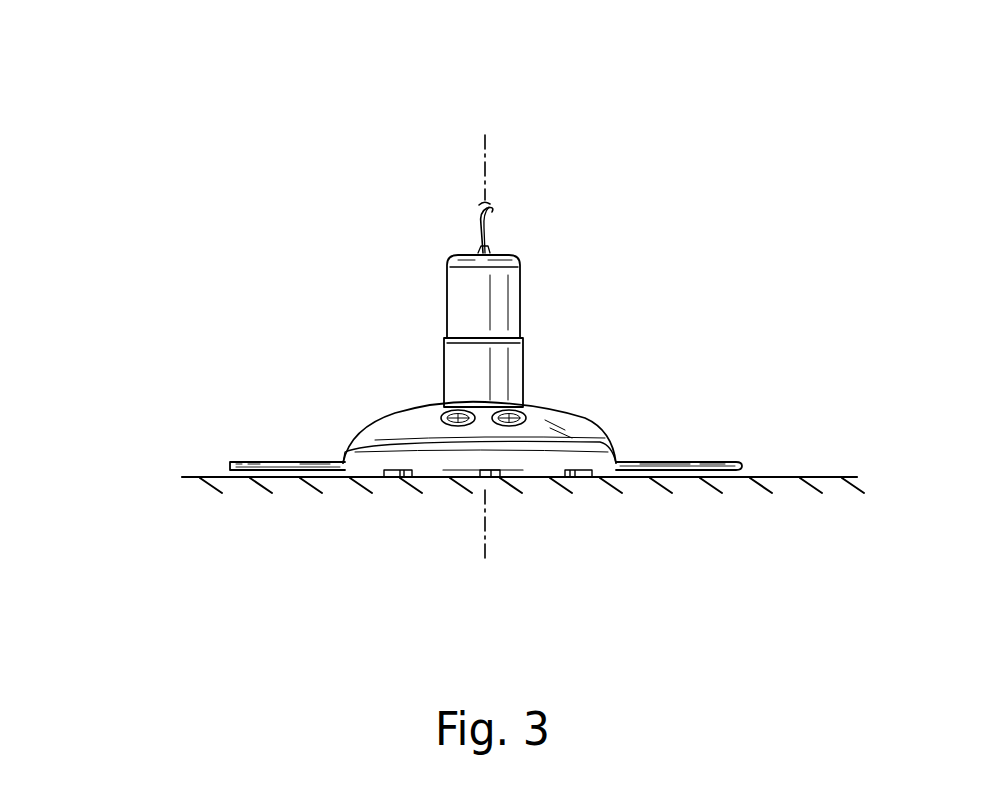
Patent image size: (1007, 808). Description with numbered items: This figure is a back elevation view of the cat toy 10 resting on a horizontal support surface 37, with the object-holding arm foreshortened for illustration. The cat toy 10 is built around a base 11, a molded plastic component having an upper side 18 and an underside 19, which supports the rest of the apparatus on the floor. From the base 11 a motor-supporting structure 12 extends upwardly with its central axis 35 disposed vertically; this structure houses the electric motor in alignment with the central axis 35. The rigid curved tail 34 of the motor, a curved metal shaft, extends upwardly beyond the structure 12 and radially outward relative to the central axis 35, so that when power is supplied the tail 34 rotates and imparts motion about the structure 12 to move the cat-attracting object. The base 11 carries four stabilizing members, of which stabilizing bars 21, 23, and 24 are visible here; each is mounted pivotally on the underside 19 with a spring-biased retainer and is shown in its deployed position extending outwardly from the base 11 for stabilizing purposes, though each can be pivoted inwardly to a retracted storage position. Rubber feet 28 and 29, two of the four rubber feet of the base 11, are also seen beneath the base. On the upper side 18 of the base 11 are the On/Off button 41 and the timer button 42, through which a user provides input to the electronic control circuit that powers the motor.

The cat toy 10 is at (288, 145).
The base 11 is at (556, 404).
The motor-supporting structure 12 is at (522, 270).
The upper side 18 is at (604, 432).
The underside 19 is at (525, 472).
The stabilizing bar 21 is at (243, 462).
The stabilizing bar 23 is at (725, 462).
The stabilizing bar 24 is at (468, 472).
The rubber foot 28 is at (588, 472).
The rubber foot 29 is at (388, 472).
The curved tail 34 is at (480, 230).
The central axis 35 is at (486, 147).
The horizontal support surface 37 is at (825, 476).
The On/Off button 41 is at (452, 412).
The timer button 42 is at (505, 412).